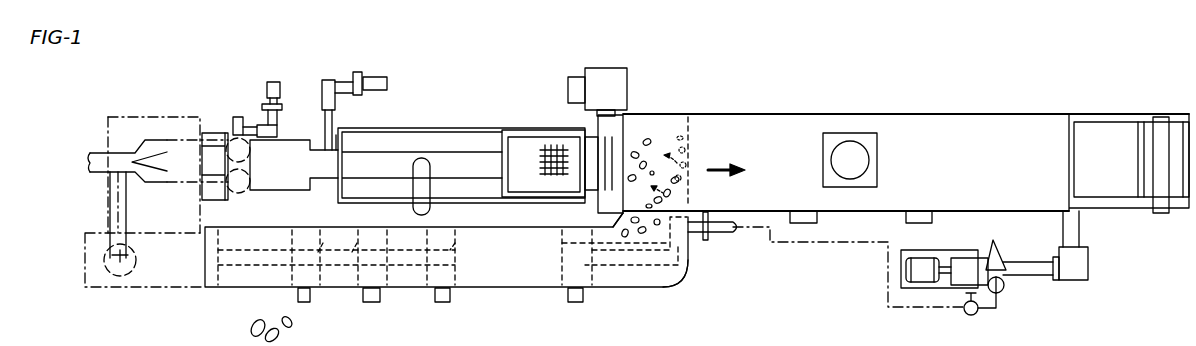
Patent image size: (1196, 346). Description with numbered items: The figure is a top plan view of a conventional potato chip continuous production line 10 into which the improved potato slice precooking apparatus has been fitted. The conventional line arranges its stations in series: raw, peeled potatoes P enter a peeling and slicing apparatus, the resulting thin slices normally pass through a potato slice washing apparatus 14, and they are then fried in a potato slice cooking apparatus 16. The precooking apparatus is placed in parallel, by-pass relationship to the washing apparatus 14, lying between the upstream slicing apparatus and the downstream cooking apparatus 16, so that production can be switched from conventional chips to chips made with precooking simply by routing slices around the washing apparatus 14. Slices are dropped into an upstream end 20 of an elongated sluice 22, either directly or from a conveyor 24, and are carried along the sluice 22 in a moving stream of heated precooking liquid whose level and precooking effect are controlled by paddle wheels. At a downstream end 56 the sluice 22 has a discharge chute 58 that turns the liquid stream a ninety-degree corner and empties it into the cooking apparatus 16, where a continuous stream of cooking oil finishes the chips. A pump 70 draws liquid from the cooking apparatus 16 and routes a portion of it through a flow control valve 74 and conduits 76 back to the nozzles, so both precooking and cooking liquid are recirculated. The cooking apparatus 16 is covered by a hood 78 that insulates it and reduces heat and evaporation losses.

The potato chip continuous production line 10 is at (1012, 101).
The potato slice washing apparatus 14 is at (455, 125).
The potato slice frying or cooking apparatus 16 is at (837, 112).
The upstream end 20 is at (203, 287).
The elongated sluice 22 is at (514, 289).
The conveyor 24 is at (409, 336).
The downstream end 56 is at (667, 287).
The discharge chute 58 is at (692, 157).
The pump 70 is at (1003, 272).
The flow control valve 74 is at (971, 316).
The conduits / flow distribution manifolds 76 is at (397, 267).
The hood 78 is at (984, 172).
The raw, peeled potatoes P is at (278, 322).